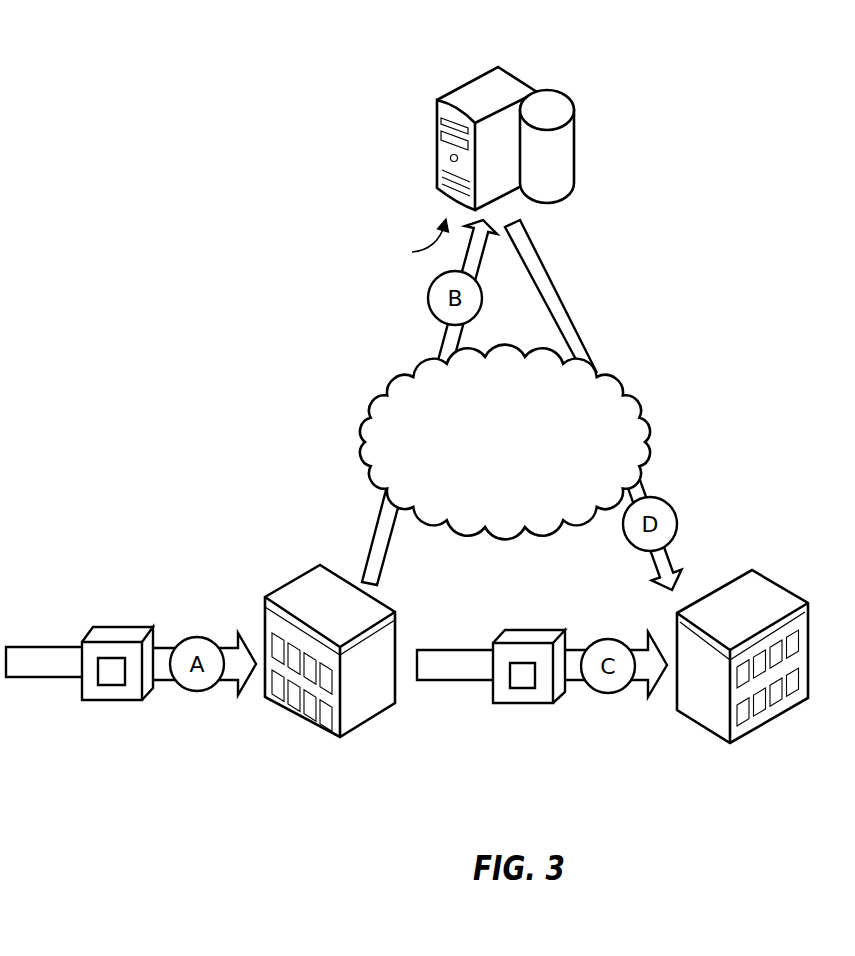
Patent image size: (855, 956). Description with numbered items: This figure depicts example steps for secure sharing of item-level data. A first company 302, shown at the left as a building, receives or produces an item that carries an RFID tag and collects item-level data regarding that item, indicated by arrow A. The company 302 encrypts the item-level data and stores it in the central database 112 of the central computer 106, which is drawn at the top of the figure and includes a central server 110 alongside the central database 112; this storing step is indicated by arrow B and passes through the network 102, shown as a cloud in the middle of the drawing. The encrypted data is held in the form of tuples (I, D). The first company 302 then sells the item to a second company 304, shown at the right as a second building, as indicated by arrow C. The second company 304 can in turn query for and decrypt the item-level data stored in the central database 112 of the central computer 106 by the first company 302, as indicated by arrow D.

The network 102 is at (610, 375).
The central computer 106 is at (405, 240).
The central server 110 is at (515, 77).
The central database 112 is at (573, 130).
The company 302 is at (342, 740).
The company 304 is at (703, 725).